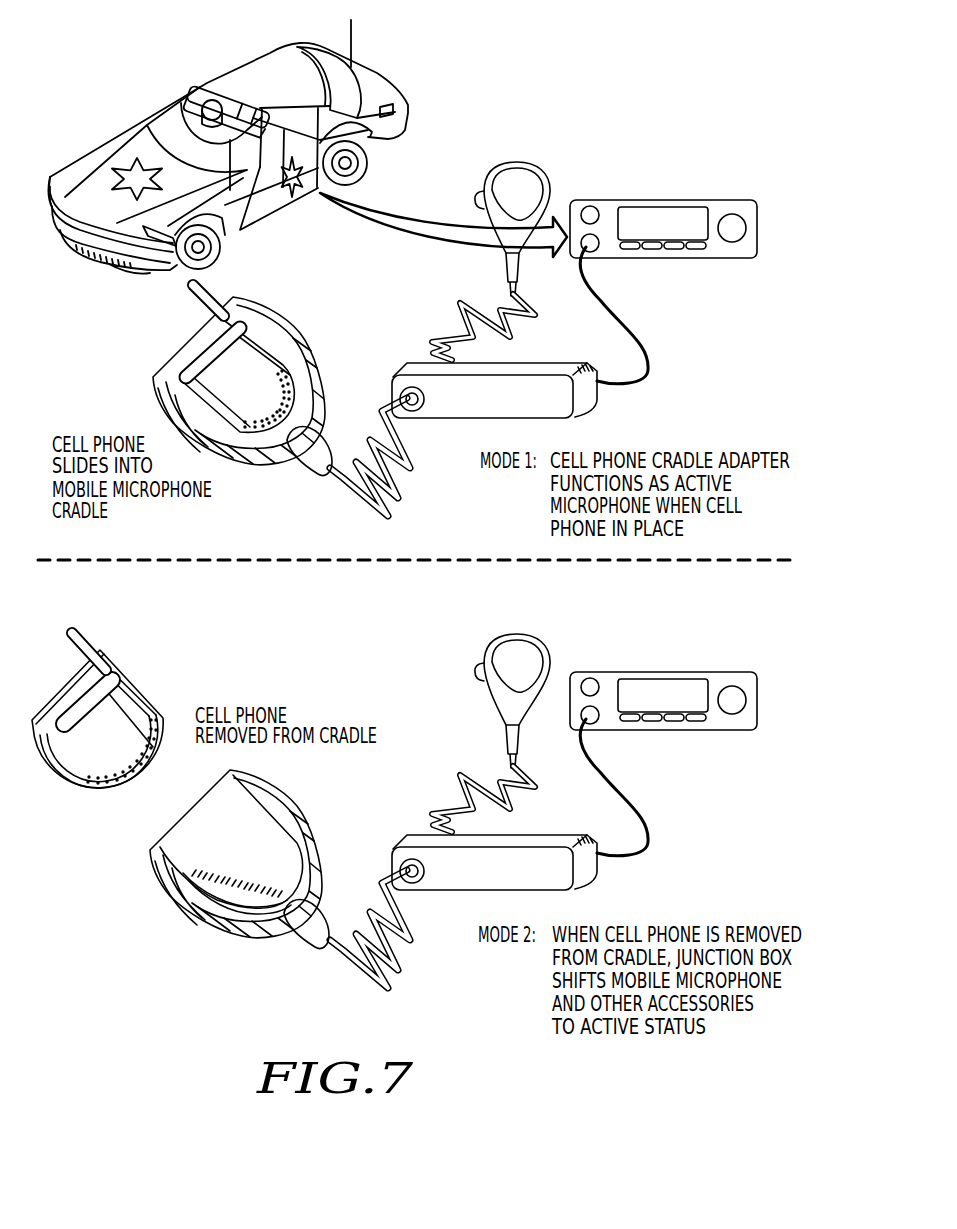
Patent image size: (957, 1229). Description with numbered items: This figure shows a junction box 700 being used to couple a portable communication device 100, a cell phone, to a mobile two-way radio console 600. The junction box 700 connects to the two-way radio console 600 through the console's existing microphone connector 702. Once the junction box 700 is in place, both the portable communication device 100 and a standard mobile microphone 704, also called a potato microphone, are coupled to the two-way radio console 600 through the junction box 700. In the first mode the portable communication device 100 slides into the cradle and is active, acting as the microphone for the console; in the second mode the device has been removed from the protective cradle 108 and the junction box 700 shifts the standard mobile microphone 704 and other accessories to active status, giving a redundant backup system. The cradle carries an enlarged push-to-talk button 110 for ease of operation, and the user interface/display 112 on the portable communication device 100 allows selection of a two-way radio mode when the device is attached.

The portable communication device 100 is at (174, 344).
The protective cradle 108 is at (288, 793).
The push-to-talk button 110 is at (160, 411).
The user interface/display 112 is at (250, 306).
The two-way radio console 600 is at (755, 240).
The junction box 700 is at (485, 418).
The microphone connector 702 is at (585, 248).
The standard mobile microphone 704 is at (541, 174).